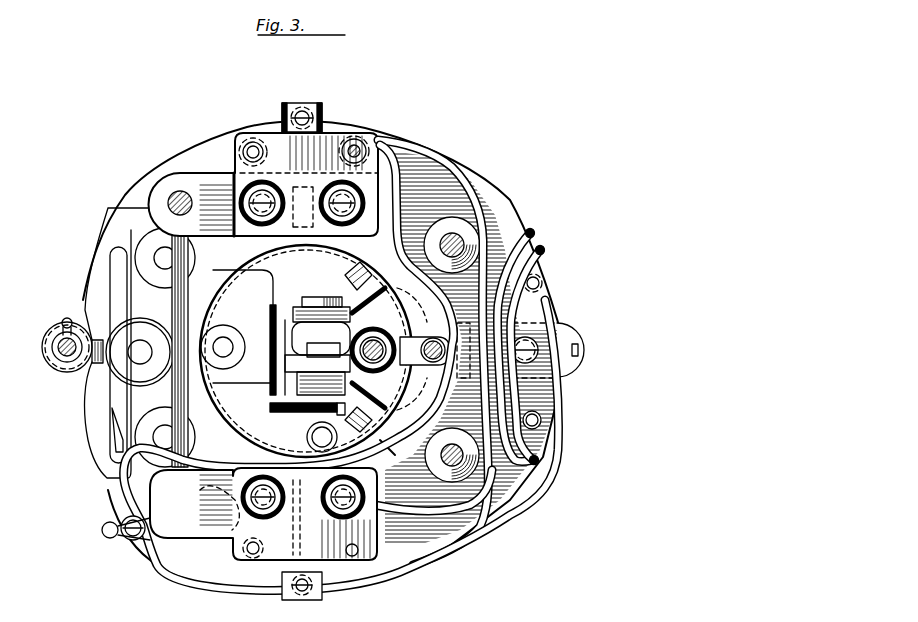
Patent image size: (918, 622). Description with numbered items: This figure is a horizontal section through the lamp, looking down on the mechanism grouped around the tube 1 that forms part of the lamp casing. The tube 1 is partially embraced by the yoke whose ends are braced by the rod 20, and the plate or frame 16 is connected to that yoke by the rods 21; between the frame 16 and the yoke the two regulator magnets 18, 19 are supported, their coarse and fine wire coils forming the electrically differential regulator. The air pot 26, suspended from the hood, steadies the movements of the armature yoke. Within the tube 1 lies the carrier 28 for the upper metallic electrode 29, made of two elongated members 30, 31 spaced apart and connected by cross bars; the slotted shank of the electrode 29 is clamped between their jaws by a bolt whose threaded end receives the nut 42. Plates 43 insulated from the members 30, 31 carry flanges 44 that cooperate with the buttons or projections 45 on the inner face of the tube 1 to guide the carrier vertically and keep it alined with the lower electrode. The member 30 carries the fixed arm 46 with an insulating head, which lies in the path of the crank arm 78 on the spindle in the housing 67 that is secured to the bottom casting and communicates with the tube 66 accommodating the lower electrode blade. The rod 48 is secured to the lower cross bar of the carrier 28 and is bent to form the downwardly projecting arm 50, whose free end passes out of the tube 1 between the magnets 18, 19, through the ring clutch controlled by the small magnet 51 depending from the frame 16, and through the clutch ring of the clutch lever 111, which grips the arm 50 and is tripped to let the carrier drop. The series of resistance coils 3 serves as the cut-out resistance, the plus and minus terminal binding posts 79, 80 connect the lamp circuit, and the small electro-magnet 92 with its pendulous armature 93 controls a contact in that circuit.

The tube 1 is at (302, 245).
The resistance coils 3 is at (162, 289).
The plate or frame 16 is at (208, 180).
The magnet 18 is at (513, 197).
The magnet 19 is at (512, 514).
The rod 20 is at (188, 404).
The rods 21 is at (177, 195).
The air pot 26 is at (59, 356).
The carrier 28 is at (322, 297).
The upper metallic electrode 29 is at (321, 340).
The elongated member 30 is at (317, 375).
The elongated member 31 is at (313, 323).
The nut 42 is at (365, 407).
The plates 43 is at (394, 440).
The flanges 44 is at (412, 348).
The buttons or projections 45 is at (352, 272).
The fixed arm 46 is at (271, 407).
The rod 48 is at (397, 328).
The downwardly projecting arm 50 is at (450, 322).
The small magnet 51 is at (572, 360).
The tube 66 is at (232, 362).
The housing 67 is at (224, 340).
The crank arm 78 is at (284, 425).
The plus terminal binding post 79 is at (308, 108).
The minus terminal binding post 80 is at (314, 589).
The small electro-magnet 92 is at (204, 532).
The pendulous armature 93 is at (300, 507).
The clutch lever 111 is at (577, 349).